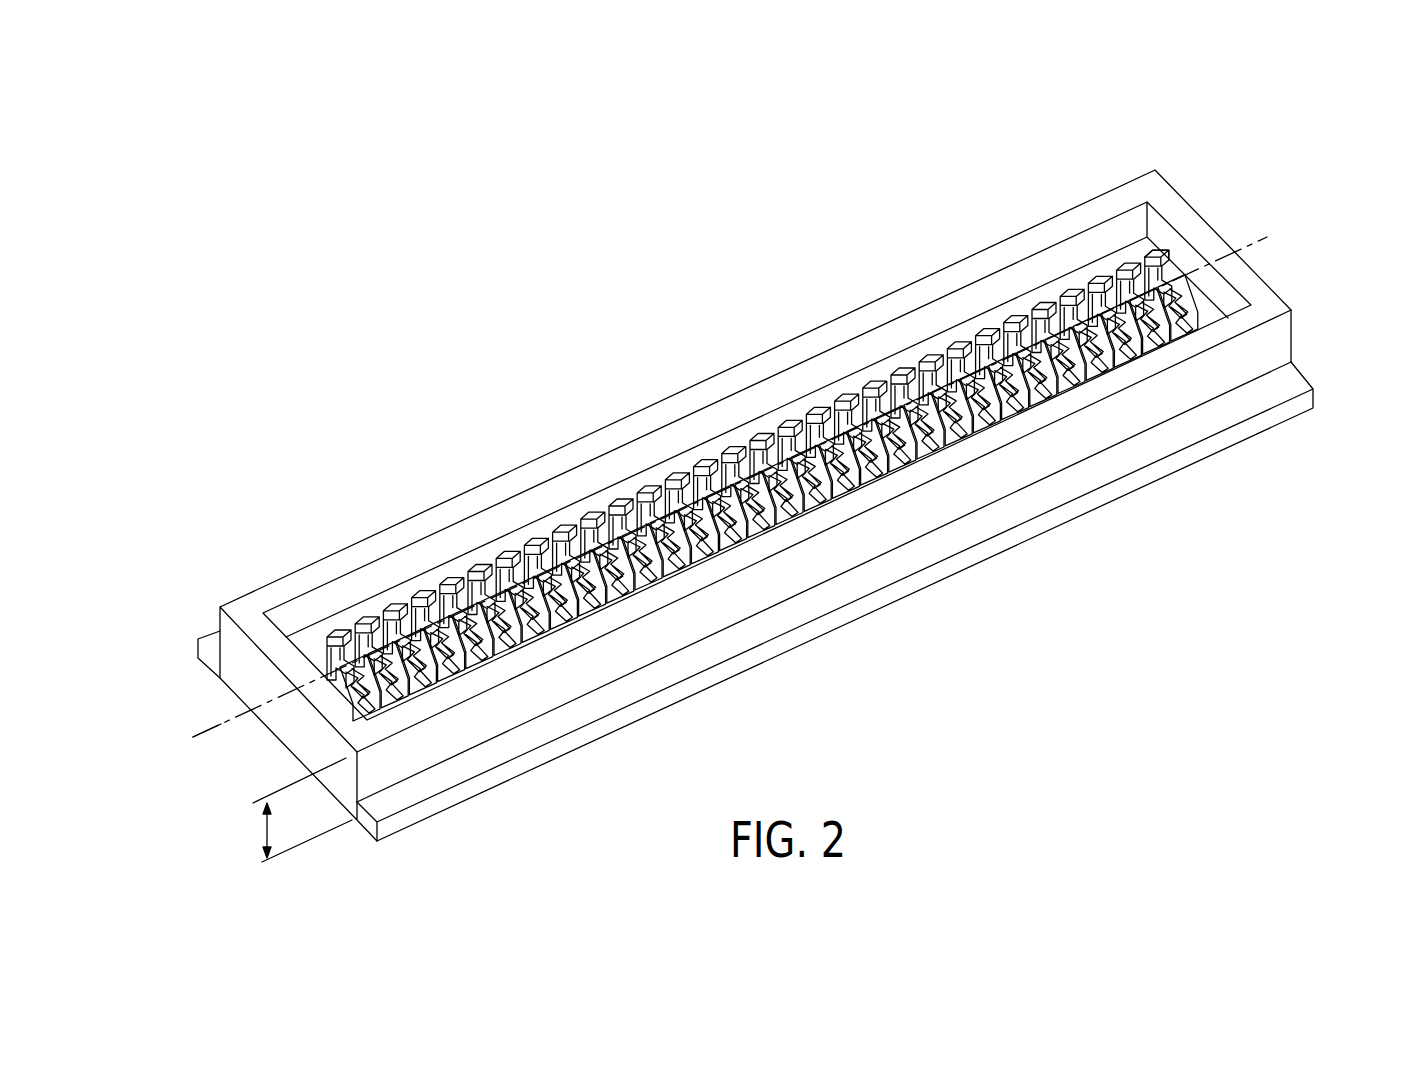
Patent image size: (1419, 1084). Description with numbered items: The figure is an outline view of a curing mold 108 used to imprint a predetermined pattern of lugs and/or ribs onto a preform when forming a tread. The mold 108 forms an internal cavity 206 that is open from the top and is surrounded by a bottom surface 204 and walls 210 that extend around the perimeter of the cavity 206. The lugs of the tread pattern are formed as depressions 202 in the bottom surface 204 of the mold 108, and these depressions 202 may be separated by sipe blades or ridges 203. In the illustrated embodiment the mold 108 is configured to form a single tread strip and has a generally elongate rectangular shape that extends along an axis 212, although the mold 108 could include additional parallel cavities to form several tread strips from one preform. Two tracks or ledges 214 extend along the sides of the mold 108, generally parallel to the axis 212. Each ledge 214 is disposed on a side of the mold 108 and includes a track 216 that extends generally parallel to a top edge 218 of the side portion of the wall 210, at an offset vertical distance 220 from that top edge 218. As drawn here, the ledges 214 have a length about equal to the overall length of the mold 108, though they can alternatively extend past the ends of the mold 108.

The mold 108 is at (1285, 341).
The depressions 202 is at (1150, 258).
The sipe blades or ridges 203 is at (1140, 226).
The bottom surface 204 is at (1177, 270).
The internal cavity 206 is at (796, 422).
The walls 210 is at (941, 292).
The axis 212 is at (212, 727).
The ledges 214 is at (205, 657).
The track 216 is at (873, 576).
The top edge 218 is at (1127, 390).
The offset vertical distance 220 is at (265, 831).